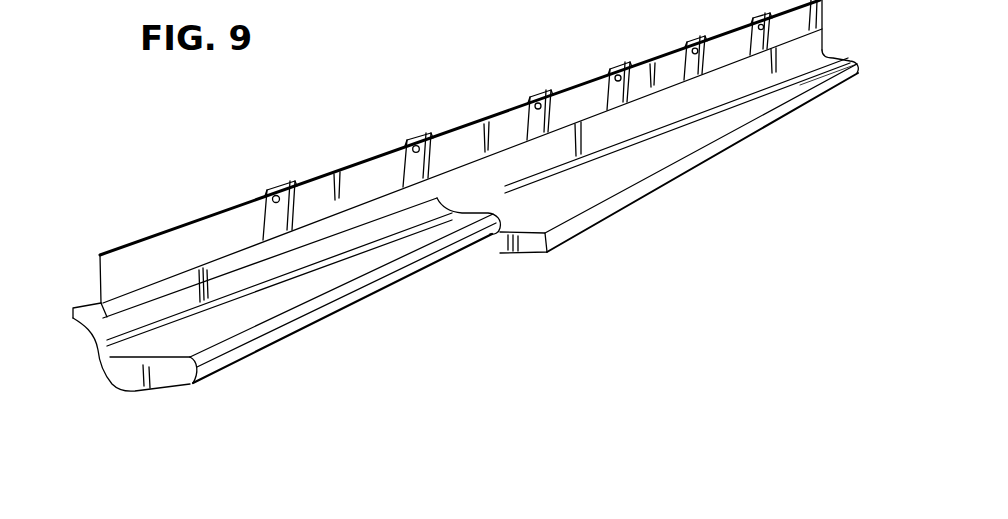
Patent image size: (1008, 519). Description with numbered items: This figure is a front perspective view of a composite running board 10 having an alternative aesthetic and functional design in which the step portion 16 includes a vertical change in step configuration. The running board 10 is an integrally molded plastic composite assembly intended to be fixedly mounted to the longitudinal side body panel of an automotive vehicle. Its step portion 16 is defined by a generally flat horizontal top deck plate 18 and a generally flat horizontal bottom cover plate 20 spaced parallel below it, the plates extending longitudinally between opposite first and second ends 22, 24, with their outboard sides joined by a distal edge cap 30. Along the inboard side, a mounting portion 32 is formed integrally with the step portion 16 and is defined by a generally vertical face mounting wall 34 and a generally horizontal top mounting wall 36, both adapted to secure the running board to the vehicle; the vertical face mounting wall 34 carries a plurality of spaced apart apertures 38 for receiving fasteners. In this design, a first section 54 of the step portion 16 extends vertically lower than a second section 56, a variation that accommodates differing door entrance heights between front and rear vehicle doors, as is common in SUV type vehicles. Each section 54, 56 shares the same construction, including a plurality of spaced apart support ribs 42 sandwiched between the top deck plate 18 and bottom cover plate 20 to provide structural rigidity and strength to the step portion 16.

The composite running board 10 is at (373, 138).
The step portion 16 is at (725, 133).
The top deck plate 18 is at (573, 198).
The bottom cover plate 20 is at (495, 256).
The first end 22 is at (85, 350).
The second end 24 is at (822, 45).
The distal edge cap 30 is at (665, 170).
The mounting portion 32 is at (86, 256).
The vertical face mounting wall 34 is at (175, 240).
The horizontal top mounting wall 36 is at (90, 307).
The apertures 38 is at (279, 196).
The support ribs 42 is at (122, 378).
The first section 54 is at (803, 84).
The second section 56 is at (295, 297).